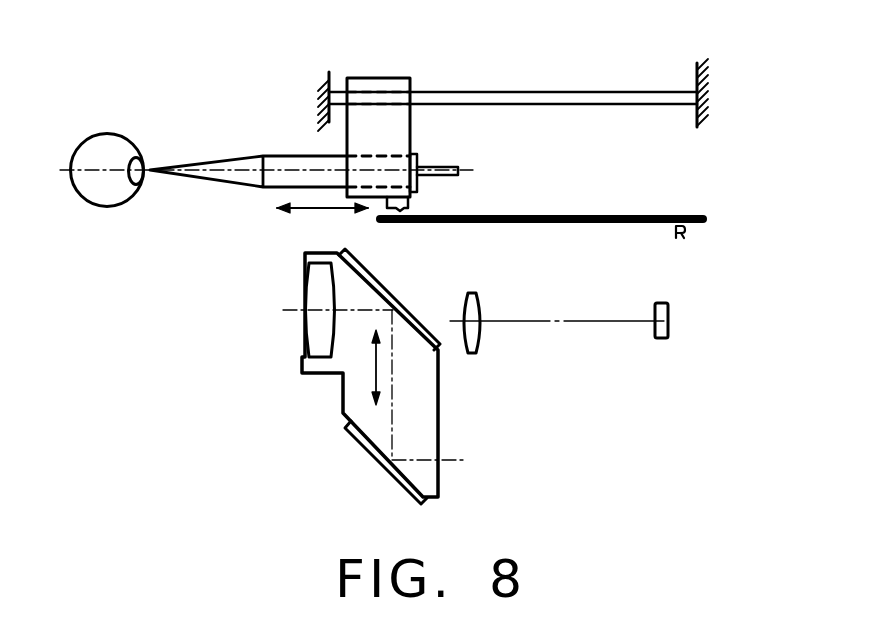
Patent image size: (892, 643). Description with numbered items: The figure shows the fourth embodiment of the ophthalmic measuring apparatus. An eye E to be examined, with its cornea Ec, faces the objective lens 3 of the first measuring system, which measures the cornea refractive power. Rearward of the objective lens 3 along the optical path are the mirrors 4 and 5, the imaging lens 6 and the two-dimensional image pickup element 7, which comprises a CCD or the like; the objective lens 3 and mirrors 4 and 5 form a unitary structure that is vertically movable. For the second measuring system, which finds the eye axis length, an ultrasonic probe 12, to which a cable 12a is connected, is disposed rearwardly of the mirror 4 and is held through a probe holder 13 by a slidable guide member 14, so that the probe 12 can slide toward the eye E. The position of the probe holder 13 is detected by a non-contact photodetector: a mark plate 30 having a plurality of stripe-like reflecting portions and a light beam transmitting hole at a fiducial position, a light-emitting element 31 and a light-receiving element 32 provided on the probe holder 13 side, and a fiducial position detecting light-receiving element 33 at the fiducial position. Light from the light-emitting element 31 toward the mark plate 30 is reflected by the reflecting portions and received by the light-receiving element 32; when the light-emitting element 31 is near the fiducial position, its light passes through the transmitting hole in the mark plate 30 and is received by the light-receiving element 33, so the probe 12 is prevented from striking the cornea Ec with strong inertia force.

The eye to be examined E is at (105, 132).
The cornea Ec is at (144, 157).
The ultrasonic probe 12 is at (290, 156).
The cable 12a is at (458, 170).
The probe holder 13 is at (390, 78).
The slidable guide member 14 is at (598, 91).
The mark plate 30 is at (575, 224).
The light-emitting element 31 is at (393, 205).
The light-receiving element 32 is at (408, 208).
The fiducial position detecting light-receiving element 33 is at (688, 232).
The objective lens 3 is at (315, 330).
The mirror 4 is at (388, 291).
The mirror 5 is at (357, 443).
The imaging lens 6 is at (478, 353).
The two-dimensional image pickup element 7 is at (662, 339).